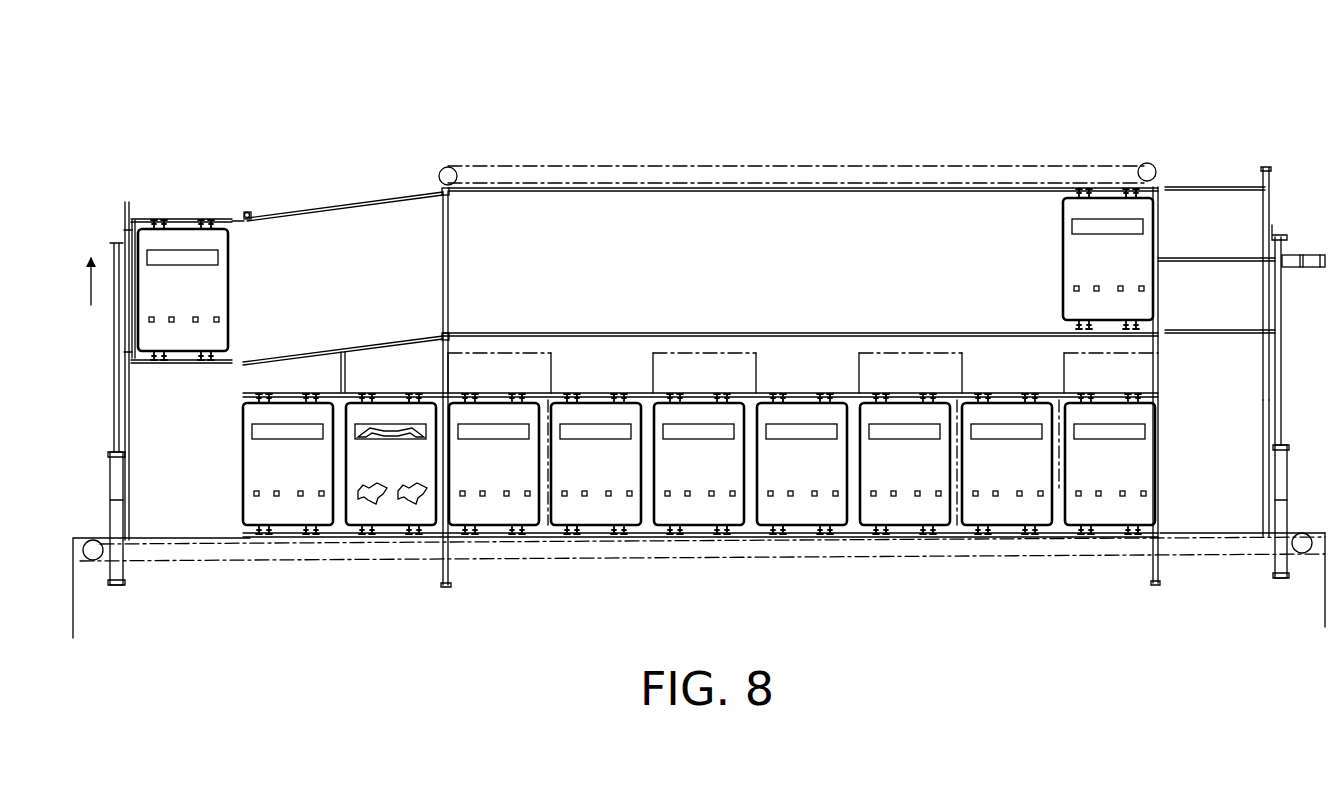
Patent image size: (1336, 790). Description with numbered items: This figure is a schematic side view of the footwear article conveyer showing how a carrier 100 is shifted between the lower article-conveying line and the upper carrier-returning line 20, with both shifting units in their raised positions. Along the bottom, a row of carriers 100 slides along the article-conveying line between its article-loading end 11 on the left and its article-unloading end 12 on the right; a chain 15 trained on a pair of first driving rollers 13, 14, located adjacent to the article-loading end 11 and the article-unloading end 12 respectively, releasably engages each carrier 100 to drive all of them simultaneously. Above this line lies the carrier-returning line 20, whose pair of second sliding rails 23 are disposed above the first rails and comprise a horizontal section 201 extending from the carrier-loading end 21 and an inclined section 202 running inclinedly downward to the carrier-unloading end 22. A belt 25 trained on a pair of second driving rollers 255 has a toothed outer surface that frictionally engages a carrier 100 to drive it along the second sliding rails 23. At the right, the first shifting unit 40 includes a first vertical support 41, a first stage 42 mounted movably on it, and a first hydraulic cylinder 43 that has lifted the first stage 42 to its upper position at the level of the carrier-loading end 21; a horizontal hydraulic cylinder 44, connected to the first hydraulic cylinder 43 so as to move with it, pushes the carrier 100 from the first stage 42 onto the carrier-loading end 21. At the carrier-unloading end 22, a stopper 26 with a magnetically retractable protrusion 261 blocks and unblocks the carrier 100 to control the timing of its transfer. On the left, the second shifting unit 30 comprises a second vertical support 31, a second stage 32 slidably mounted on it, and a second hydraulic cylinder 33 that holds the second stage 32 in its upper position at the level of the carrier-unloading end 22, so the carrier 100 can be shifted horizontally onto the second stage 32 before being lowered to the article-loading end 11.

The article-loading end 11 is at (127, 578).
The article-unloading end 12 is at (1275, 537).
The first driving roller 13 is at (93, 557).
The first driving roller 14 is at (1302, 553).
The chain 15 is at (990, 557).
The carrier-returning line 20 is at (395, 186).
The carrier-loading end 21 is at (1157, 183).
The carrier-unloading end 22 is at (250, 213).
The second sliding rails 23 is at (357, 343).
The belt 25 is at (1043, 163).
The stopper 26 is at (246, 212).
The second shifting unit 30 is at (106, 408).
The second vertical support 31 is at (128, 434).
The second stage 32 is at (143, 212).
The second hydraulic cylinder 33 is at (110, 487).
The first shifting unit 40 is at (1292, 385).
The first vertical support 41 is at (1263, 398).
The first stage 42 is at (1208, 187).
The first hydraulic cylinder 43 is at (1288, 478).
The horizontal hydraulic cylinder 44 is at (1313, 253).
The carrier 100 is at (178, 233).
The horizontal section 201 is at (923, 325).
The inclined section 202 is at (422, 333).
The second driving rollers 255 is at (448, 167).
The protrusion 261 is at (249, 224).